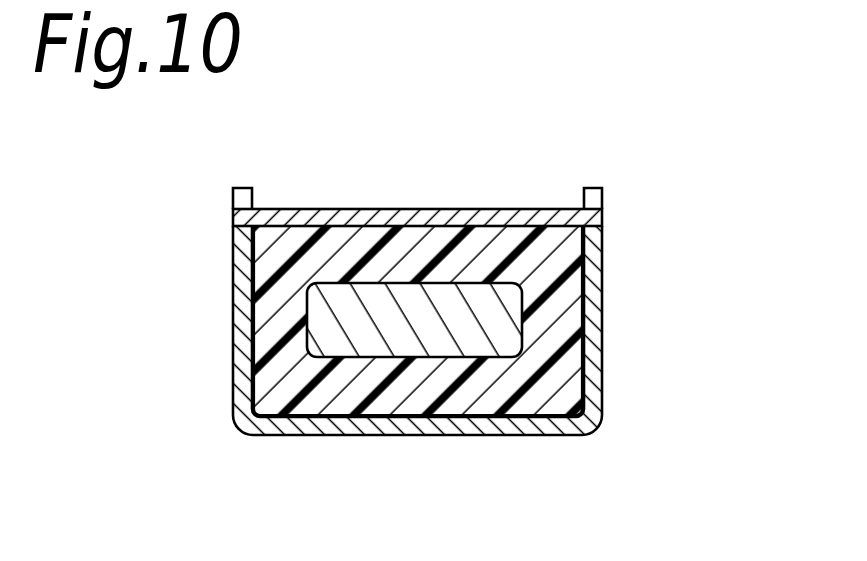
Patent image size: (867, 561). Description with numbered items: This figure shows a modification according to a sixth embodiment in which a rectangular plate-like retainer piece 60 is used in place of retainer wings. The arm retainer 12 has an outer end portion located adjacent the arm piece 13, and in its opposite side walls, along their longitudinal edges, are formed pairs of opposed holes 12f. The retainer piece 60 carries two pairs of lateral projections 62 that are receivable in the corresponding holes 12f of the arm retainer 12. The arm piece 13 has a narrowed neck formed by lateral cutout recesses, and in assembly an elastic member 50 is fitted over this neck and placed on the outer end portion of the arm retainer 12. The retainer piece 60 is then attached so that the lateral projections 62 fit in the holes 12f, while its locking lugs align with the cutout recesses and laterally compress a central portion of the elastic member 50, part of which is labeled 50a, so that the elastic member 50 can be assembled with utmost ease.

The arm retainer 12 is at (233, 348).
The opposed holes 12f is at (238, 218).
The arm piece 13 is at (355, 342).
The elastic member 50 is at (558, 347).
The resin layer 50a is at (558, 358).
The retainer piece 60 is at (372, 210).
The lateral projections 62 is at (238, 232).